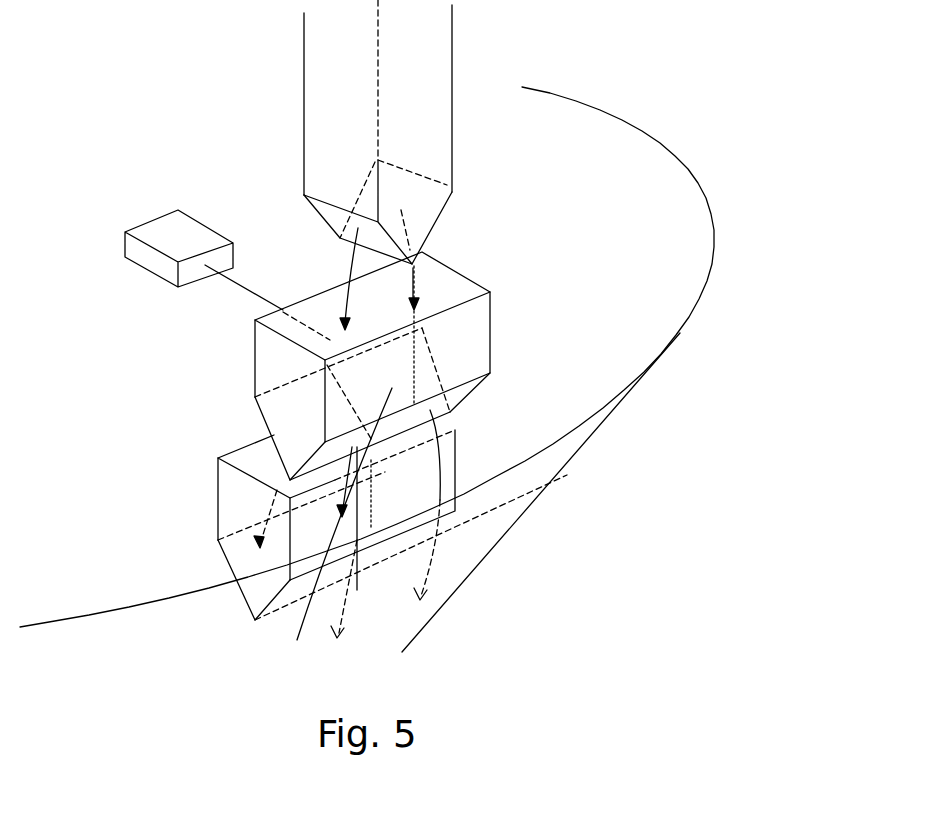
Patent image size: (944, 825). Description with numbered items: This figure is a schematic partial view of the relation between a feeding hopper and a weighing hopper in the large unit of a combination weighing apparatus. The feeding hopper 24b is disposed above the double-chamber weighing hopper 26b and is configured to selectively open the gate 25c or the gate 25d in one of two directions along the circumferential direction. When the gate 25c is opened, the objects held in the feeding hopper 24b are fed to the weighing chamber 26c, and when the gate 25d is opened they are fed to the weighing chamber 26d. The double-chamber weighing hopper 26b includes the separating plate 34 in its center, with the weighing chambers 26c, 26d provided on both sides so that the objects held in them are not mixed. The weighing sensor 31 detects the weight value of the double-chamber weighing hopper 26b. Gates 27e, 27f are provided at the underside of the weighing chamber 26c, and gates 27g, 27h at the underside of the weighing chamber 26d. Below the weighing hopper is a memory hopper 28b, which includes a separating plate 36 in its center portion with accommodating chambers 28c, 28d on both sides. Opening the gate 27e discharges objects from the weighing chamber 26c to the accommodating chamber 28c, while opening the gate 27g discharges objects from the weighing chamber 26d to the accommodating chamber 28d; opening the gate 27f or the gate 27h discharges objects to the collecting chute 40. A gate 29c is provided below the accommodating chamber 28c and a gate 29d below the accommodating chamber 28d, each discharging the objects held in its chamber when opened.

The feeding hopper 24b is at (453, 143).
The gate 25c is at (318, 216).
The gate 25d is at (440, 222).
The double-chamber weighing hopper 26b is at (508, 317).
The weighing chamber 26c is at (273, 308).
The weighing chamber 26d is at (449, 269).
The gate 27e is at (243, 419).
The gate 27f is at (337, 529).
The gate 27g is at (443, 348).
The gate 27h is at (478, 392).
The memory hopper 28b is at (188, 504).
The accommodating chamber 28c is at (237, 455).
The accommodating chamber 28d is at (449, 418).
The gate 29c is at (202, 563).
The gate 29d is at (567, 476).
The weighing sensor 31 is at (157, 222).
The separating plate 34 is at (352, 282).
The separating plate 36 is at (395, 450).
The collecting chute 40 is at (512, 525).